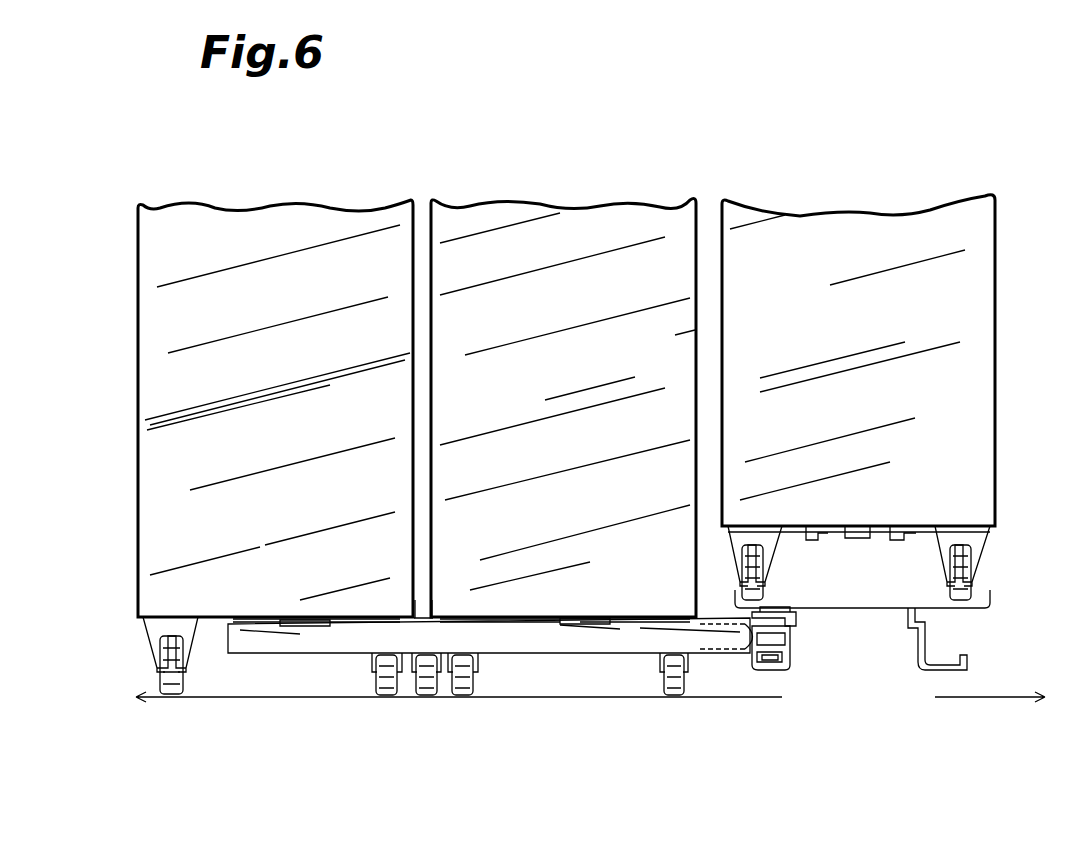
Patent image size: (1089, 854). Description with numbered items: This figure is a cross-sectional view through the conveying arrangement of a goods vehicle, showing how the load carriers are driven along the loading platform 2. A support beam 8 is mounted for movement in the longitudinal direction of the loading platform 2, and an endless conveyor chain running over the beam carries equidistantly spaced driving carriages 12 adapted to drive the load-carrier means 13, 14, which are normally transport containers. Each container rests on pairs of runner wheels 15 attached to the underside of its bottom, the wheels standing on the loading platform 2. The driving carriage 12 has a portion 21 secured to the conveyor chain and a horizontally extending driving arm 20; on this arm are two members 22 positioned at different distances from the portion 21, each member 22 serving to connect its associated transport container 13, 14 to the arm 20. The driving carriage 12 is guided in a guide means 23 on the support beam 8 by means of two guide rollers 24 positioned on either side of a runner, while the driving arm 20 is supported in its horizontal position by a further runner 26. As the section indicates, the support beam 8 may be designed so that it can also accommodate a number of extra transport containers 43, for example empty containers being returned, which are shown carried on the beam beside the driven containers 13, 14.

The loading platform 2 is at (585, 698).
The support beam 8 is at (887, 610).
The driving carriage 12 is at (714, 660).
The load-carrier means 13 is at (160, 308).
The load-carrier means 14 is at (670, 330).
The runner wheels 15 is at (172, 692).
The driving arm 20 is at (636, 636).
The portion of the driving carriage 21 is at (782, 610).
The members 22 is at (300, 628).
The guide means 23 is at (792, 656).
The guide rollers 24 is at (768, 666).
The runner 26 is at (426, 692).
The extra transport containers 43 is at (985, 356).